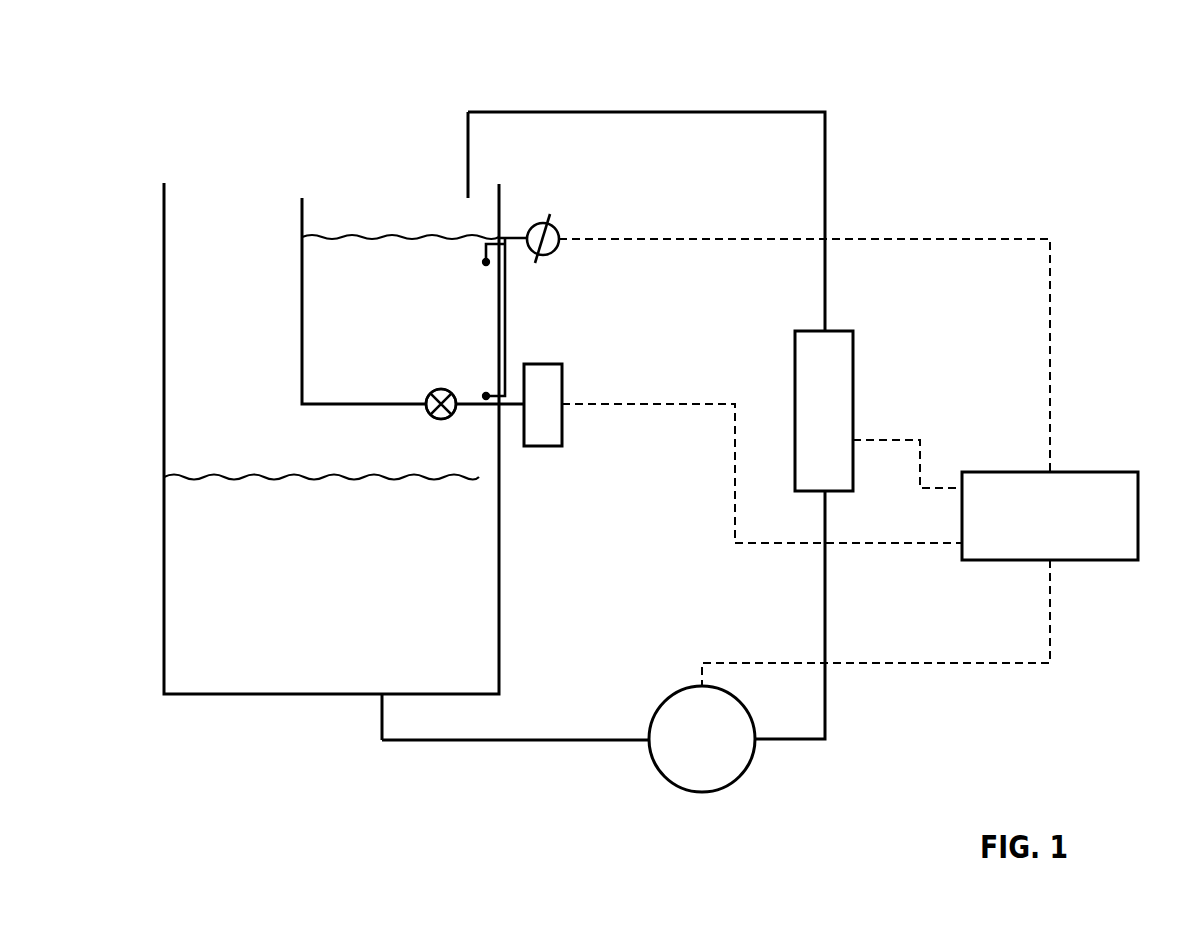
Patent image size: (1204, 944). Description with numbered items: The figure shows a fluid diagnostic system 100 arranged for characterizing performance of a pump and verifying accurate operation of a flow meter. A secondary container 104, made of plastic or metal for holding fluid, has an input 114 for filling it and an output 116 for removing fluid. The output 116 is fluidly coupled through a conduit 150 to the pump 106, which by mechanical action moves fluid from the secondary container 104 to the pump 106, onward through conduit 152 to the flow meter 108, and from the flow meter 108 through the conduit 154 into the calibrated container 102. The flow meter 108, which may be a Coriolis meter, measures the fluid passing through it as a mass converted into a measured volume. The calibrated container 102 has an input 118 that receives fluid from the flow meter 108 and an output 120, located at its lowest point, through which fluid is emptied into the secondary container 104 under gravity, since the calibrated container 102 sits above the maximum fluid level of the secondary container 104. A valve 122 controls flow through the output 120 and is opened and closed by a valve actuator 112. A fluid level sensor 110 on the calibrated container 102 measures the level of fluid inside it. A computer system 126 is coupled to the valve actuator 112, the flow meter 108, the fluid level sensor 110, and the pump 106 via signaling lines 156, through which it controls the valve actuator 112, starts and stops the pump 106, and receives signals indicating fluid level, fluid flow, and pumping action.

The fluid diagnostic system 100 is at (1043, 78).
The calibrated container 102 is at (299, 340).
The secondary container 104 is at (499, 632).
The pump 106 is at (702, 794).
The flow meter 108 is at (850, 331).
The fluid level sensor 110 is at (638, 325).
The valve actuator 112 is at (637, 487).
The input 114 is at (230, 188).
The output 116 is at (362, 712).
The input 118 is at (436, 195).
The output 120 is at (418, 378).
The valve 122 is at (441, 420).
The computer system 126 is at (1100, 561).
The conduit 150 is at (505, 743).
The conduit 152 is at (825, 600).
The conduit 154 is at (825, 168).
The signaling lines 156 is at (1050, 356).